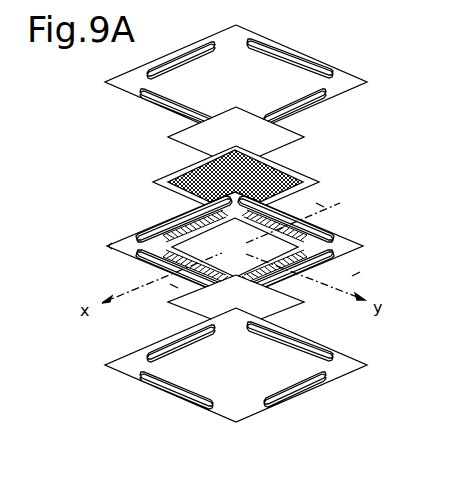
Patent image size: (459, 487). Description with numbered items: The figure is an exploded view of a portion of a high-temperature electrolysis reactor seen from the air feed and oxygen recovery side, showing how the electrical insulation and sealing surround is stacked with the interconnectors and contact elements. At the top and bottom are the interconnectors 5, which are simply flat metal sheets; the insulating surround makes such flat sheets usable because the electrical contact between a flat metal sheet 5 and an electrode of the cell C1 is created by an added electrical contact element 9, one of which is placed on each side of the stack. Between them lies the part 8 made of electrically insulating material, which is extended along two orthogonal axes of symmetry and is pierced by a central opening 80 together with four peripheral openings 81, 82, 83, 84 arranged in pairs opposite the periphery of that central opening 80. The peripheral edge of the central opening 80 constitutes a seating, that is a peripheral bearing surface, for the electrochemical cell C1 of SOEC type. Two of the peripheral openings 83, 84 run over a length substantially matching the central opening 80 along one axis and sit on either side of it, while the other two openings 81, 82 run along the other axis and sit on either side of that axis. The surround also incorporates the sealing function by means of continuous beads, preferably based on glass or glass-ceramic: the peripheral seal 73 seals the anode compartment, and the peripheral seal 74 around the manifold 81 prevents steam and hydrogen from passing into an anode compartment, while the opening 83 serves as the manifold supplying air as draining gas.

The interconnector 5 is at (275, 75).
The electrical contact element 9 is at (282, 145).
The electrochemical cell C1 is at (186, 163).
The electrically insulating part 8 is at (355, 250).
The peripheral seal 73 is at (220, 243).
The peripheral seal 74 is at (140, 255).
The central opening 80 is at (246, 256).
The peripheral opening 81 is at (173, 285).
The peripheral opening 82 is at (318, 205).
The peripheral opening 83 is at (355, 278).
The peripheral opening 84 is at (112, 247).